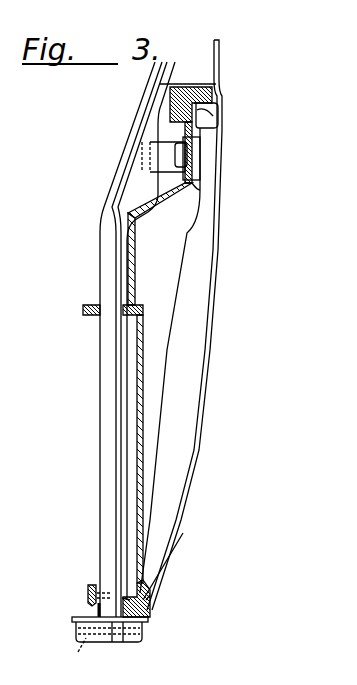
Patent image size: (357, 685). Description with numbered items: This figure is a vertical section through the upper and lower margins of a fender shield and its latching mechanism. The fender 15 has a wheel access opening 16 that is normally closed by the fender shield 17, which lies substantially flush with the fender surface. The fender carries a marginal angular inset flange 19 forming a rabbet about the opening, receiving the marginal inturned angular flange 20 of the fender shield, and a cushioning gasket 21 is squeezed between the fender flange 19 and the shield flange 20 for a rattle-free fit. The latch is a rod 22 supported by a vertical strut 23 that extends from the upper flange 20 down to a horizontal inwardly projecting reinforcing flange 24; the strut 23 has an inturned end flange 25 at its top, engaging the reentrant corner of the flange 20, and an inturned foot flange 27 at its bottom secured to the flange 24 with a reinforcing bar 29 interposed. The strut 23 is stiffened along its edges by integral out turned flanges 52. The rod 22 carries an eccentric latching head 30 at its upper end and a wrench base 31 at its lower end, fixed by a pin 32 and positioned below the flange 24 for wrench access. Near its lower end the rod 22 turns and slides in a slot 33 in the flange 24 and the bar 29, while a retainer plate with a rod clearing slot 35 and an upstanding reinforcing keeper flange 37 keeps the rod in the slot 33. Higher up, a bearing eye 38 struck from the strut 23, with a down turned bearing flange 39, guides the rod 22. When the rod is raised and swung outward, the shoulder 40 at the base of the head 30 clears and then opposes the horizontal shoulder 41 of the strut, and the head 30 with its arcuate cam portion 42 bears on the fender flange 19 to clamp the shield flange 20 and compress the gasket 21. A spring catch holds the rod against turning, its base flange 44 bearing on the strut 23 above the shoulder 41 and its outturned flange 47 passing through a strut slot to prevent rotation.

The fender 15 is at (219, 38).
The wheel access opening 16 is at (219, 85).
The fender shield 17 is at (201, 408).
The marginal angular inset flange 19 is at (170, 84).
The marginal inturned angular flange 20 is at (218, 112).
The cushioning gasket 21 is at (213, 98).
The rod 22 is at (102, 418).
The vertical strut 23 is at (145, 370).
The horizontal inwardly projecting reinforcing flange 24 is at (152, 607).
The inturned end flange 25 is at (200, 122).
The inturned foot flange 27 is at (175, 545).
The reinforcing bar 29 is at (150, 595).
The latching head 30 is at (142, 134).
The wrench base 31 is at (132, 640).
The pin 32 is at (80, 648).
The slot 33 is at (98, 607).
The rod clearing slot 35 is at (122, 598).
The reinforcing keeper flange 37 is at (88, 590).
The bearing eye 38 is at (83, 309).
The down turned bearing flange 39 is at (100, 315).
The shoulder 40 is at (138, 215).
The horizontal shoulder 41 is at (150, 220).
The cam portion 42 is at (152, 81).
The base flange 44 is at (200, 181).
The outturned flange 47 is at (202, 145).
The out turned flanges 52 is at (162, 316).